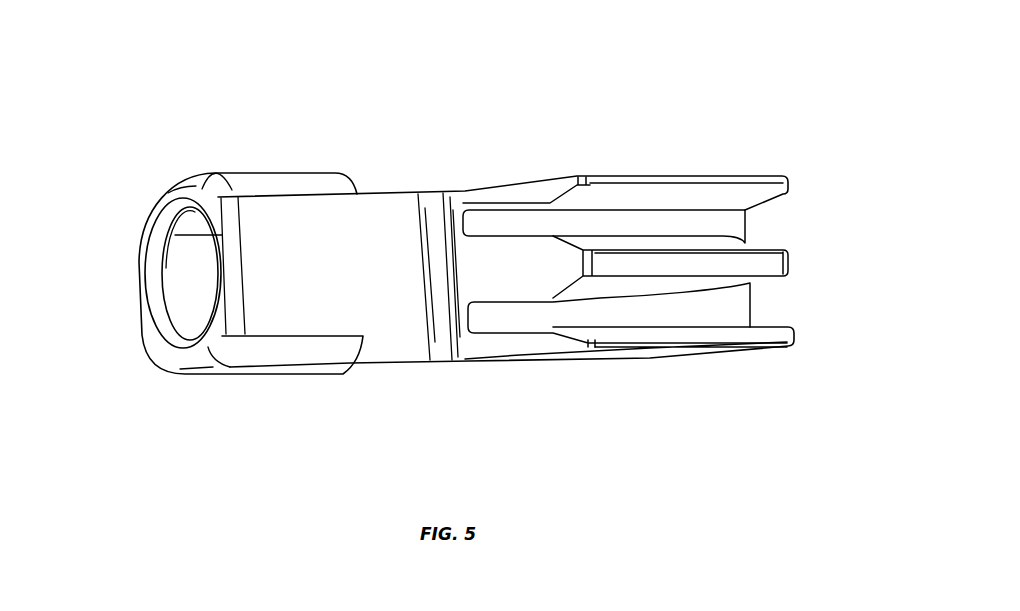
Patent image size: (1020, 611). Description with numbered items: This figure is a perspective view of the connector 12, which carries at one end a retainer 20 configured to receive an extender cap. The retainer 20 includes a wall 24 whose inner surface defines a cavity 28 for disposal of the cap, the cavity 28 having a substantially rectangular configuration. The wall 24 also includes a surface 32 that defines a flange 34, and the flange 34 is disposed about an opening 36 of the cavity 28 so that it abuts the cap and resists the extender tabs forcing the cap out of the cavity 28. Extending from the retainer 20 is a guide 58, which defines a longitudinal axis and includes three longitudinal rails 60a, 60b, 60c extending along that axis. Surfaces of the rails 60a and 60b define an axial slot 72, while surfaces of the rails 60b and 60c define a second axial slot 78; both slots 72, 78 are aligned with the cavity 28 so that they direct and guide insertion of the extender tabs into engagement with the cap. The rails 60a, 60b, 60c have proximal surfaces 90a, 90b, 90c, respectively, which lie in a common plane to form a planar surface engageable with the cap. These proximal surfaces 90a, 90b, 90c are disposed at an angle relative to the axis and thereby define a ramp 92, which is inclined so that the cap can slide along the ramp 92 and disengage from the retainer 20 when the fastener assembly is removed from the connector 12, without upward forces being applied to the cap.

The connector 12 is at (84, 430).
The retainer 20 is at (248, 133).
The wall 24 is at (212, 367).
The cavity 28 is at (198, 245).
The surface 32 is at (143, 282).
The flange 34 is at (155, 260).
The opening 36 is at (187, 292).
The guide 58 is at (653, 401).
The longitudinal rail 60a is at (698, 345).
The longitudinal rail 60b is at (723, 261).
The longitudinal rail 60c is at (708, 177).
The axial slot 72 is at (790, 294).
The axial slot 78 is at (791, 221).
The proximal surface 90a is at (510, 342).
The proximal surface 90b is at (503, 267).
The proximal surface 90c is at (507, 193).
The ramp 92 is at (513, 360).